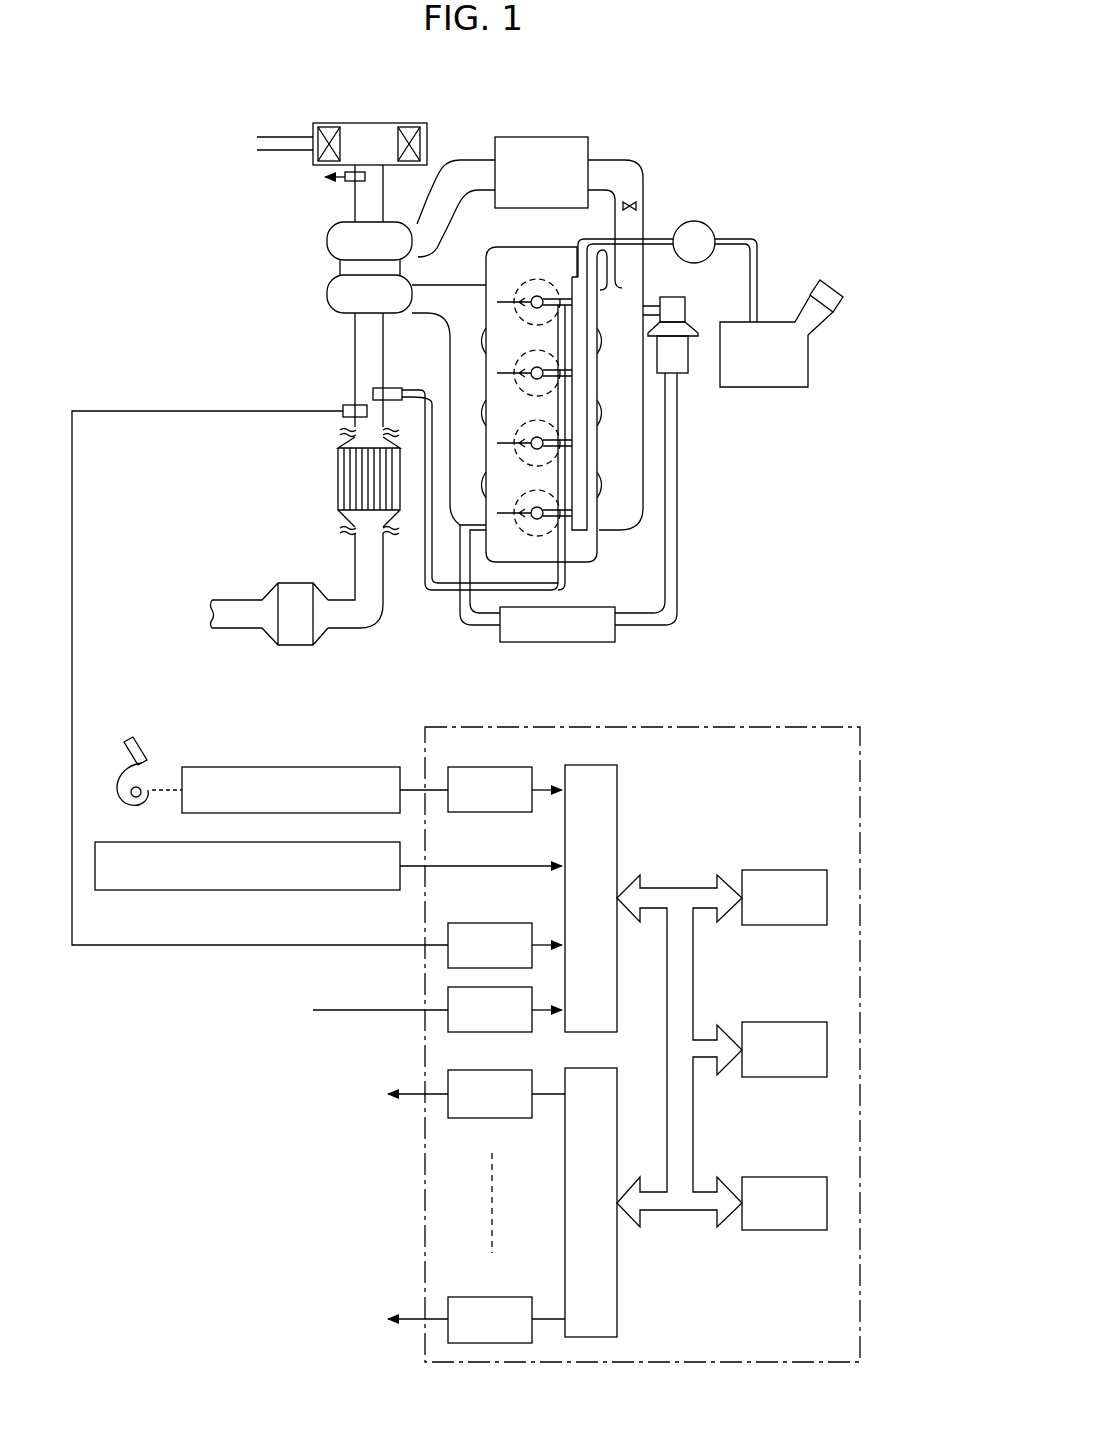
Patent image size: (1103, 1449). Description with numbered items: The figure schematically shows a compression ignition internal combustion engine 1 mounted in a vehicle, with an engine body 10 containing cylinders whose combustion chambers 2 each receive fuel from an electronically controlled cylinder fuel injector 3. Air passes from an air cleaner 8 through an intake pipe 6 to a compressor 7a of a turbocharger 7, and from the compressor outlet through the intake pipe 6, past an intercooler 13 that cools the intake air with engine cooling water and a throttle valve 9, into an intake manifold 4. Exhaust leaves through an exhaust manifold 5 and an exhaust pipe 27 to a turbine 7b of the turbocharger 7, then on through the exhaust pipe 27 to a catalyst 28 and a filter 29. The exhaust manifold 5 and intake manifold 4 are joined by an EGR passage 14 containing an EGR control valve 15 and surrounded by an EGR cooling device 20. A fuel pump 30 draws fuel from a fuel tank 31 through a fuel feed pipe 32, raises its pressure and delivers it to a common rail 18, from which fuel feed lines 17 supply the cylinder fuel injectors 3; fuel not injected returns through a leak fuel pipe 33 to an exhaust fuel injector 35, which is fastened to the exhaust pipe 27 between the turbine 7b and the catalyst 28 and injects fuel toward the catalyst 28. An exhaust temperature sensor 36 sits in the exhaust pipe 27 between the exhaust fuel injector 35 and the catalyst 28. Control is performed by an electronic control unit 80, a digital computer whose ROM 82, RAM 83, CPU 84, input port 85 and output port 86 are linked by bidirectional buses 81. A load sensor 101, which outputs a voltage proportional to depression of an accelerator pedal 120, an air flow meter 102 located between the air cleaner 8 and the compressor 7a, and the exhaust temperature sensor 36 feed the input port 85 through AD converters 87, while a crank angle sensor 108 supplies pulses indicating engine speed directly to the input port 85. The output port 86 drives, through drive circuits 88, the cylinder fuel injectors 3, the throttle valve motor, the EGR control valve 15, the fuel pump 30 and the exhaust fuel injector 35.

The internal combustion engine 1 is at (748, 126).
The combustion chamber 2 is at (503, 263).
The cylinder fuel injector 3 is at (526, 300).
The intake manifold 4 is at (644, 510).
The exhaust manifold 5 is at (450, 512).
The intake pipe 6 is at (355, 216).
The turbocharger 7 is at (318, 259).
The compressor 7a is at (342, 238).
The turbine 7b is at (342, 300).
The air cleaner 8 is at (367, 124).
The throttle valve 9 is at (637, 204).
The engine body 10 is at (605, 547).
The intercooler 13 is at (545, 137).
The EGR passage 14 is at (683, 583).
The EGR control valve 15 is at (680, 297).
The fuel feed line 17 is at (545, 266).
The common rail 18 is at (578, 387).
The EGR cooling device 20 is at (618, 641).
The exhaust pipe 27 is at (355, 336).
The catalyst 28 is at (338, 480).
The filter 29 is at (286, 583).
The fuel pump 30 is at (722, 232).
The fuel tank 31 is at (758, 388).
The fuel feed pipe 32 is at (762, 241).
The leak fuel pipe 33 is at (568, 574).
The exhaust fuel injector 35 is at (390, 388).
The exhaust temperature sensor 36 is at (343, 410).
The electronic control unit 80 is at (864, 802).
The bidirectional bus 81 is at (678, 888).
The ROM 82 is at (784, 870).
The RAM 83 is at (784, 1022).
The CPU 84 is at (784, 1177).
The input port 85 is at (617, 788).
The output port 86 is at (617, 1304).
The AD converter 87 is at (497, 767).
The drive circuit 88 is at (448, 1105).
The load sensor 101 is at (333, 767).
The air flow meter 102 is at (338, 178).
The crank angle sensor 108 is at (306, 890).
The accelerator pedal 120 is at (150, 738).